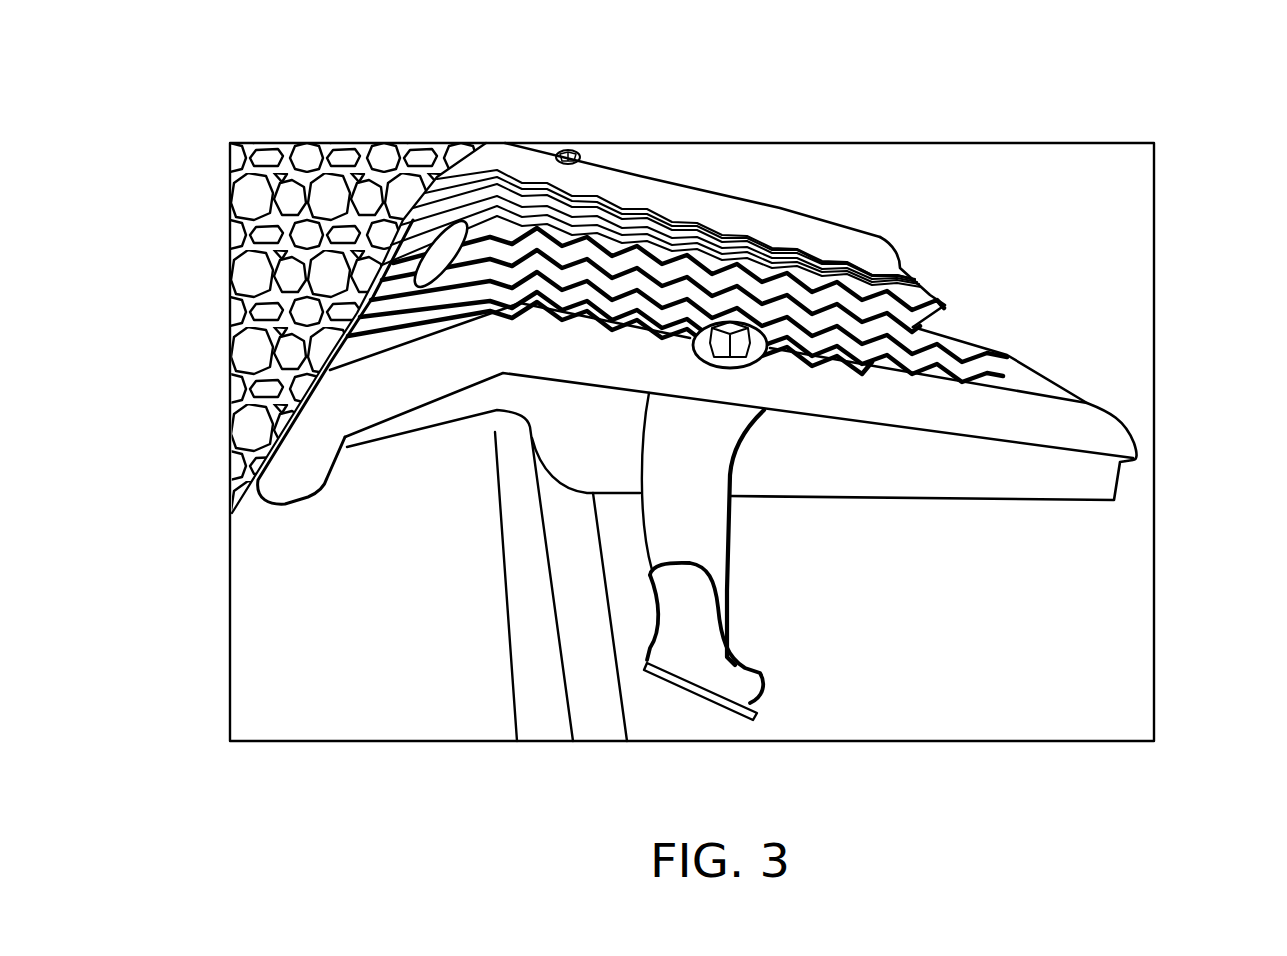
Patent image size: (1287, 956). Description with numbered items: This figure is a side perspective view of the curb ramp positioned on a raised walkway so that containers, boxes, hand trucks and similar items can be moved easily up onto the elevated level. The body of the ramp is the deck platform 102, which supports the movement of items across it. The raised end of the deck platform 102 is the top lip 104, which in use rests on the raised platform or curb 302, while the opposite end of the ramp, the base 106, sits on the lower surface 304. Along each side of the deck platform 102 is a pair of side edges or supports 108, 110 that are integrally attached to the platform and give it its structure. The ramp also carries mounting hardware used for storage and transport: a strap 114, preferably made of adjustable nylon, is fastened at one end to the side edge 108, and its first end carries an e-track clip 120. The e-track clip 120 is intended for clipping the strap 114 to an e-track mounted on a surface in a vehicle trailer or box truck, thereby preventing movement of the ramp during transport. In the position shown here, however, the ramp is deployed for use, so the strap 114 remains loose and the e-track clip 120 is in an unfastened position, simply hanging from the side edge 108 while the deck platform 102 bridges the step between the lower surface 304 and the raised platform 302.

The deck platform 102 is at (690, 270).
The top lip 104 is at (262, 375).
The base 106 is at (938, 294).
The side edge 108 is at (877, 406).
The side edge 110 is at (803, 228).
The strap 114 is at (683, 510).
The e-track clip 120 is at (763, 688).
The raised platform or walkway 302 is at (350, 612).
The lower surface 304 is at (1010, 677).